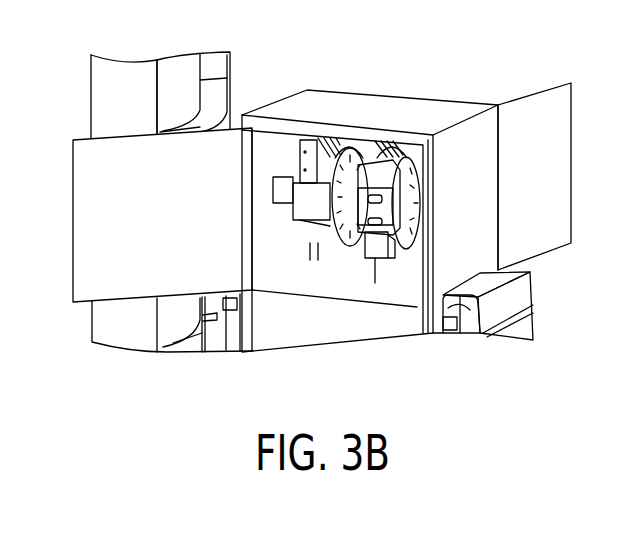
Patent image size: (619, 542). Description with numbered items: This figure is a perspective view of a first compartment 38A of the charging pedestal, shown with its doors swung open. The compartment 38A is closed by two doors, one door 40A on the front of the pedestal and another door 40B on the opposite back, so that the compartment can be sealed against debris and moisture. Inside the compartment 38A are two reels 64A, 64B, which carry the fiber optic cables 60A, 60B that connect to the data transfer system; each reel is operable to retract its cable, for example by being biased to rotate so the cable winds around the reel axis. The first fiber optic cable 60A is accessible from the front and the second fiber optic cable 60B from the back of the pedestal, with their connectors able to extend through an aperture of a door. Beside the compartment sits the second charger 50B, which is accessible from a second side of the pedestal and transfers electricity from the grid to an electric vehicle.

The compartment 38A is at (299, 282).
The door 40A is at (180, 231).
The door 40B is at (551, 192).
The second charger 50B is at (517, 303).
The first fiber optic cable 60A is at (352, 252).
The second fiber optic cable 60B is at (352, 252).
The reel 64A is at (330, 160).
The reel 64B is at (398, 150).